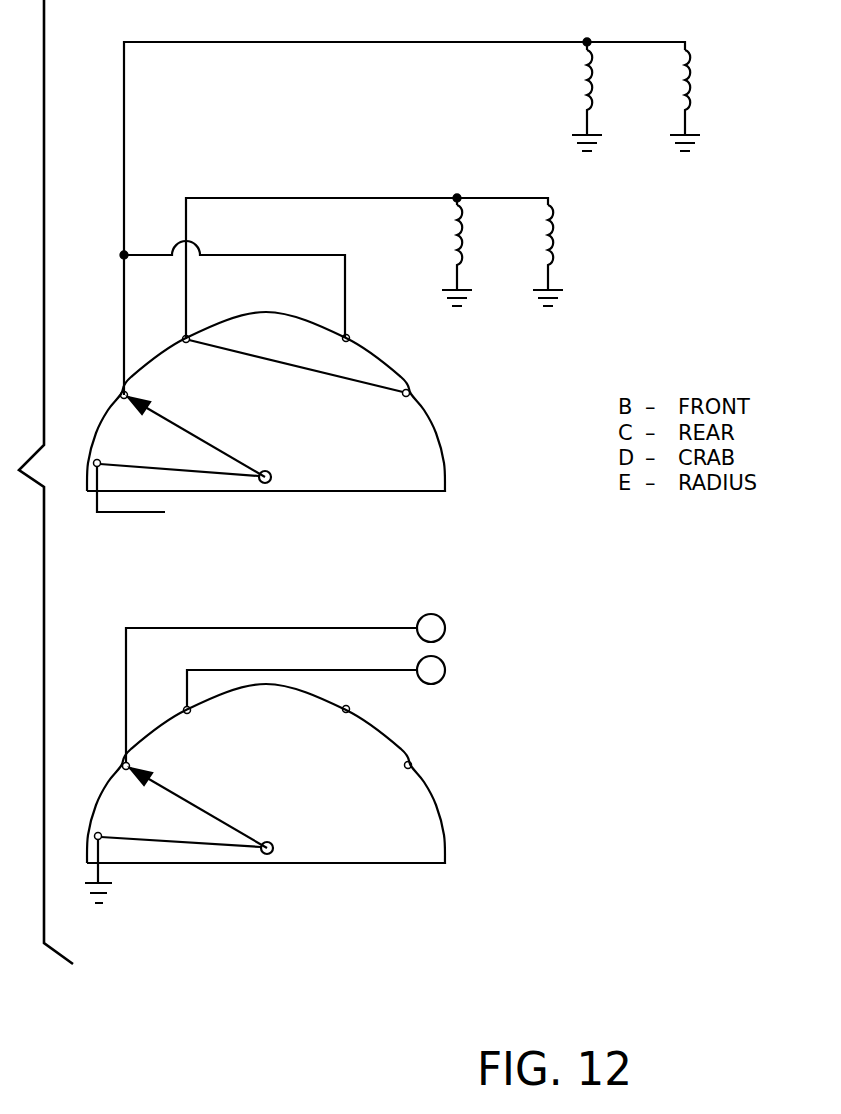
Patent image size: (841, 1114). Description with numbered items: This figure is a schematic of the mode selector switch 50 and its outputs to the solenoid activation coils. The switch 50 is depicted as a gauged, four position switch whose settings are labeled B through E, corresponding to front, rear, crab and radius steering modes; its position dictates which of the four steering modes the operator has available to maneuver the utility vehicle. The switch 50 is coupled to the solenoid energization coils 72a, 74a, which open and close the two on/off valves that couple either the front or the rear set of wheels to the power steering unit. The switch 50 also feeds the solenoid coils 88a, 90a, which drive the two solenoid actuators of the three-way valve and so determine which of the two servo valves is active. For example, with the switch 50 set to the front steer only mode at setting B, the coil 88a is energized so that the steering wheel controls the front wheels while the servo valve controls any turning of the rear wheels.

The solenoid energization coil 72a is at (585, 100).
The solenoid coil 88a is at (690, 90).
The solenoid energization coil 74a is at (457, 243).
The solenoid coil 90a is at (555, 233).
The mode selector switch 50 is at (425, 406).